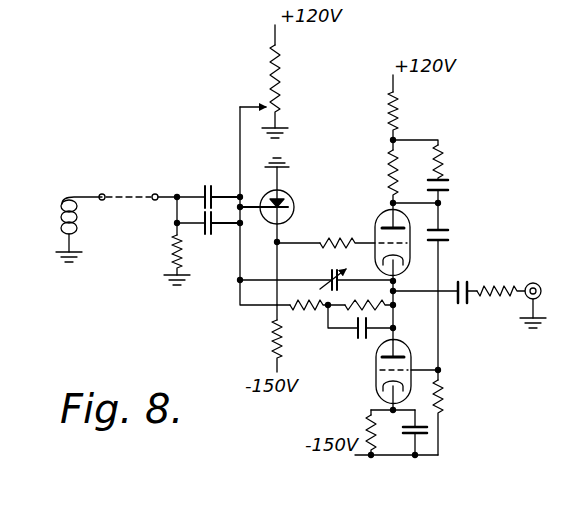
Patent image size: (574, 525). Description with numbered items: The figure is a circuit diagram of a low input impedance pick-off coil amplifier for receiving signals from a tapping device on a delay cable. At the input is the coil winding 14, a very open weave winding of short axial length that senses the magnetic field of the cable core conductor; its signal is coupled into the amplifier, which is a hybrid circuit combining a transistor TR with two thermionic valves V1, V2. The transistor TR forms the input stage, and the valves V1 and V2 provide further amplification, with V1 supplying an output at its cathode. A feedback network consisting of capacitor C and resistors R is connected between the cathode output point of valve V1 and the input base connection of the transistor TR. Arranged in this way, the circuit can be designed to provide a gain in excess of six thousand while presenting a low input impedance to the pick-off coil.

The coil winding 14 is at (60, 211).
The transistor TR is at (280, 231).
The thermionic valve V1 is at (382, 268).
The thermionic valve V2 is at (391, 375).
The resistor R is at (317, 319).
The capacitor C is at (360, 334).